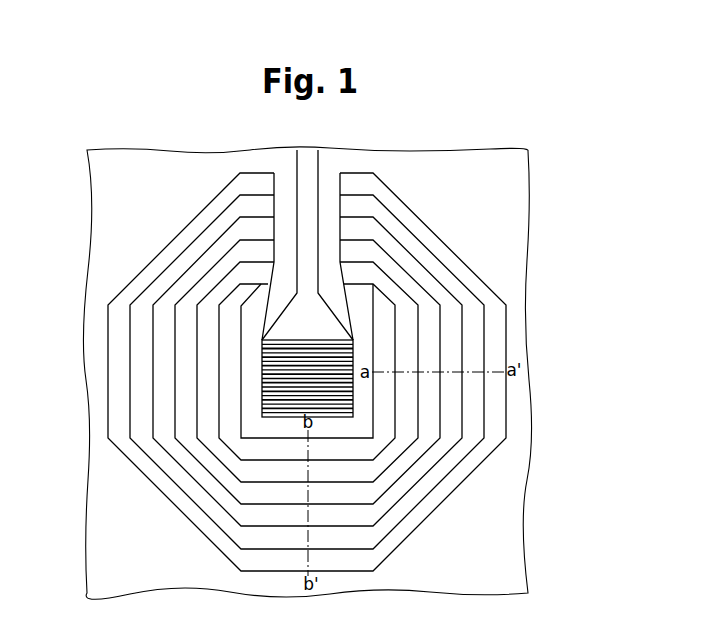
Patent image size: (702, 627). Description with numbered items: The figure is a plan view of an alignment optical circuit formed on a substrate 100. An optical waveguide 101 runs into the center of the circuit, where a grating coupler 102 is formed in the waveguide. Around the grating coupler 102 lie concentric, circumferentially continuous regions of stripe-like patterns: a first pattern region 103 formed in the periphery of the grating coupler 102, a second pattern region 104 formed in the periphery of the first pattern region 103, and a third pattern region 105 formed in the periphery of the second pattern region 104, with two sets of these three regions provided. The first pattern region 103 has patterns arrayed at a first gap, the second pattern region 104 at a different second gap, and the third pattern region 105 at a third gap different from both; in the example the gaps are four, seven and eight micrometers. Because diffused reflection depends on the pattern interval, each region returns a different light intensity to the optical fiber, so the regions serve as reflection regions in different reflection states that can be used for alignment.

The substrate 100 is at (520, 192).
The optical waveguide 101 is at (319, 195).
The grating coupler 102 is at (257, 372).
The first pattern region 103 is at (167, 347).
The second pattern region 104 is at (147, 389).
The third pattern region 105 is at (185, 420).